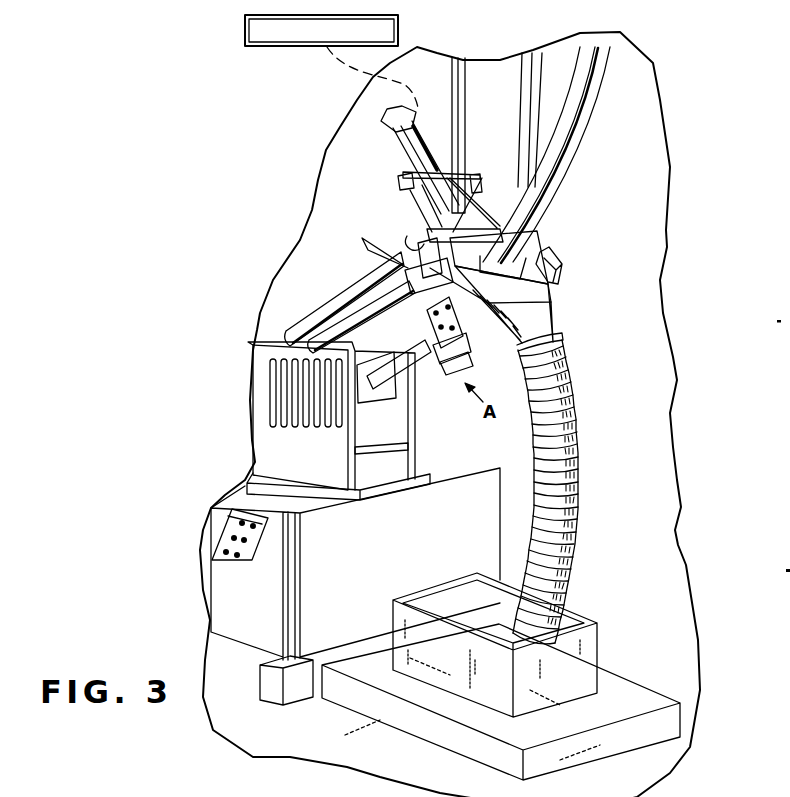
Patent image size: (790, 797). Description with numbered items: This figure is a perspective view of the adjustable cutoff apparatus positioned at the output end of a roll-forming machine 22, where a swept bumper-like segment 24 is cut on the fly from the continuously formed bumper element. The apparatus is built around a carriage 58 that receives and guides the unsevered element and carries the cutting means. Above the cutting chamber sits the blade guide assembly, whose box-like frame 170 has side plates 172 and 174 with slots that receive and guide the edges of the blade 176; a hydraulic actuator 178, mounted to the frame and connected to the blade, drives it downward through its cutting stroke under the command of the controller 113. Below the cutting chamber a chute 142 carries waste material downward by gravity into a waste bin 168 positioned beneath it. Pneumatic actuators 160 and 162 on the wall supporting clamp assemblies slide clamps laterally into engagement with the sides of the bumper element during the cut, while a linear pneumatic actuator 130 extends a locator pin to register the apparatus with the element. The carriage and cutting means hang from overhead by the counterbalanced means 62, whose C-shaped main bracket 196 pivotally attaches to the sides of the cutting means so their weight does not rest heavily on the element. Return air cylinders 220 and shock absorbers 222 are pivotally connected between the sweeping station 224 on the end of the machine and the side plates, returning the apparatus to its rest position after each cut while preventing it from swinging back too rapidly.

The controller 113 is at (398, 30).
The suspended counterbalanced means 62 is at (541, 70).
The C-shaped main bracket 196 is at (520, 78).
The segment 24 is at (603, 96).
The blade 176 is at (577, 177).
The side plate 174 is at (485, 205).
The hydraulic actuator 178 is at (345, 130).
The side plate 172 is at (412, 200).
The box-like frame 170 is at (525, 253).
The pneumatic actuator 160 is at (558, 262).
The chute 142 is at (553, 317).
The return air cylinder 220 is at (352, 253).
The pneumatic actuator 162 is at (421, 296).
The shock absorber 222 is at (343, 344).
The carriage 58 is at (473, 332).
The linear pneumatic actuator 130 is at (440, 377).
The sweeping station 224 is at (318, 465).
The roll-forming machine 22 is at (208, 572).
The waste bin 168 is at (600, 636).